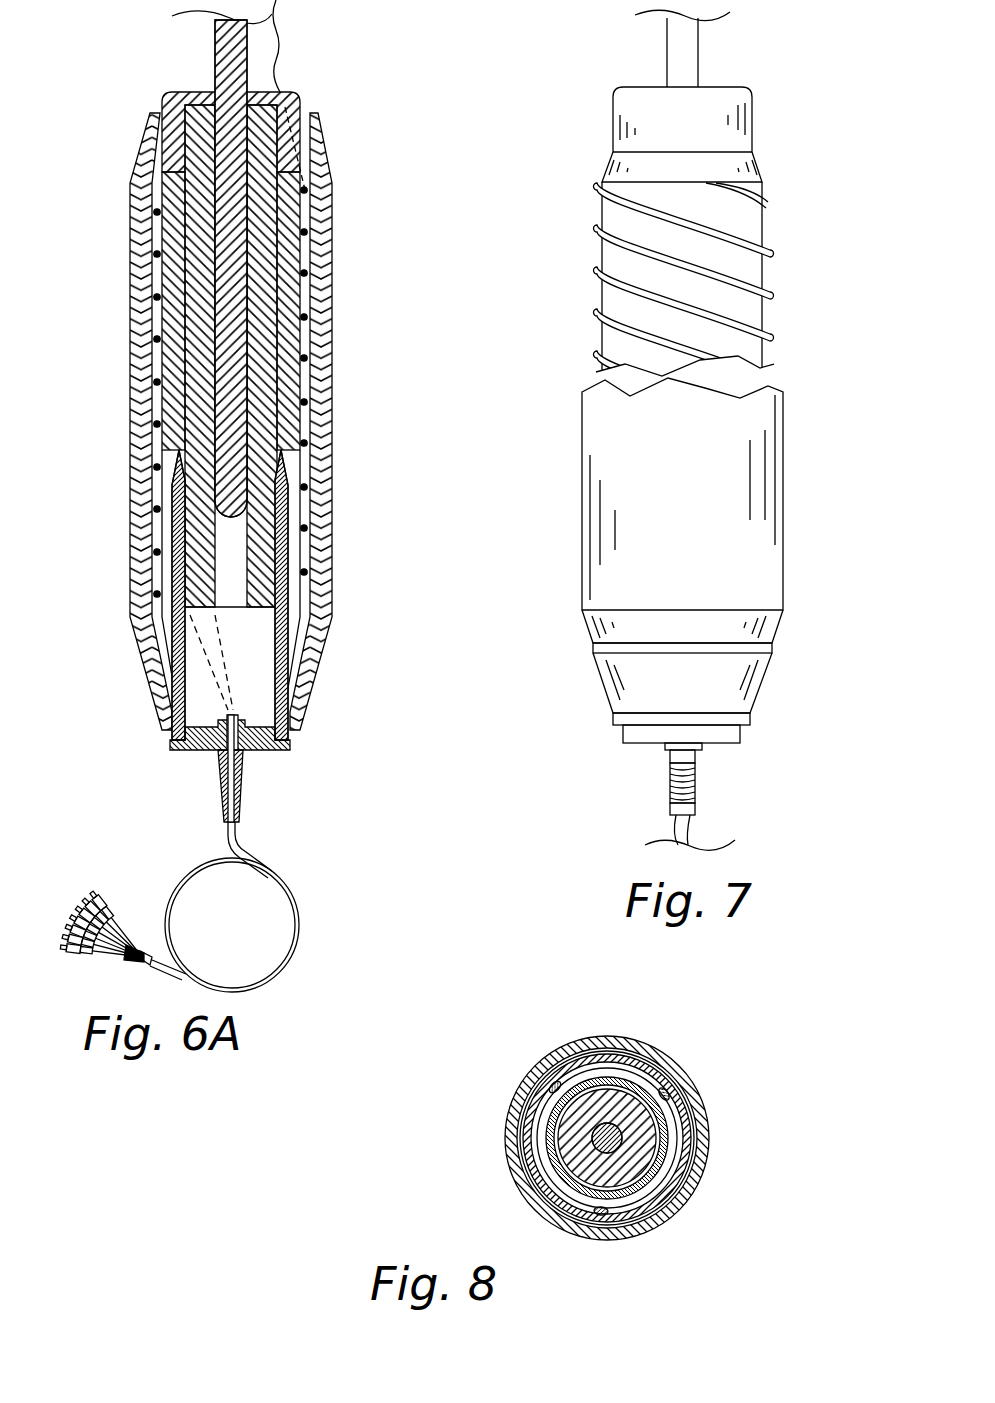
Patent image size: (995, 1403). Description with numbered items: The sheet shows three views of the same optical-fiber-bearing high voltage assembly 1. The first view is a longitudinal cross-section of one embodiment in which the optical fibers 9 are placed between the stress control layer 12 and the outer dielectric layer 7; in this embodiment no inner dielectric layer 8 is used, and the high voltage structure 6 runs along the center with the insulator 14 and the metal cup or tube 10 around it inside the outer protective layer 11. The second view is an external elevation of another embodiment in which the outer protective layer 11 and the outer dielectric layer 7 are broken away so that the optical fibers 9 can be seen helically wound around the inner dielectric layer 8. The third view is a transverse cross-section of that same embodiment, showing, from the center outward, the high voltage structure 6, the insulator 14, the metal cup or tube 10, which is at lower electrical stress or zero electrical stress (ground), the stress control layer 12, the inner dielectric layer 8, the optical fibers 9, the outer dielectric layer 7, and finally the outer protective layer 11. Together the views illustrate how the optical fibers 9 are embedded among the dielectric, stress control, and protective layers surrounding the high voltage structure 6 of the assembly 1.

In FIG. 6A, the probe assembly 1 is at (98, 248).
In FIG. 7, the probe assembly 1 is at (565, 262).
In FIG. 6A, the high voltage structure 6 is at (214, 62).
In FIG. 7, the high voltage structure 6 is at (667, 44).
In FIG. 8, the high voltage structure 6 is at (600, 1152).
In FIG. 6A, the outer dielectric layer 7 is at (316, 214).
In FIG. 7, the outer dielectric layer 7 is at (750, 377).
In FIG. 8, the outer dielectric layer 7 is at (687, 1120).
In FIG. 7, the inner dielectric layer 8 is at (735, 210).
In FIG. 8, the inner dielectric layer 8 is at (680, 1148).
In FIG. 6A, the optical fibers 9 is at (306, 272).
In FIG. 7, the optical fibers 9 is at (748, 272).
In FIG. 8, the optical fibers 9 is at (535, 1095).
In FIG. 6A, the metal cup or tube 10 is at (288, 543).
In FIG. 8, the metal cup or tube 10 is at (540, 1172).
In FIG. 6A, the outer protective layer 11 is at (312, 157).
In FIG. 7, the outer protective layer 11 is at (728, 478).
In FIG. 8, the outer protective layer 11 is at (508, 1147).
In FIG. 6A, the stress control layer 12 is at (282, 423).
In FIG. 8, the stress control layer 12 is at (660, 1190).
In FIG. 6A, the insulator 14 is at (258, 345).
In FIG. 8, the insulator 14 is at (640, 1190).